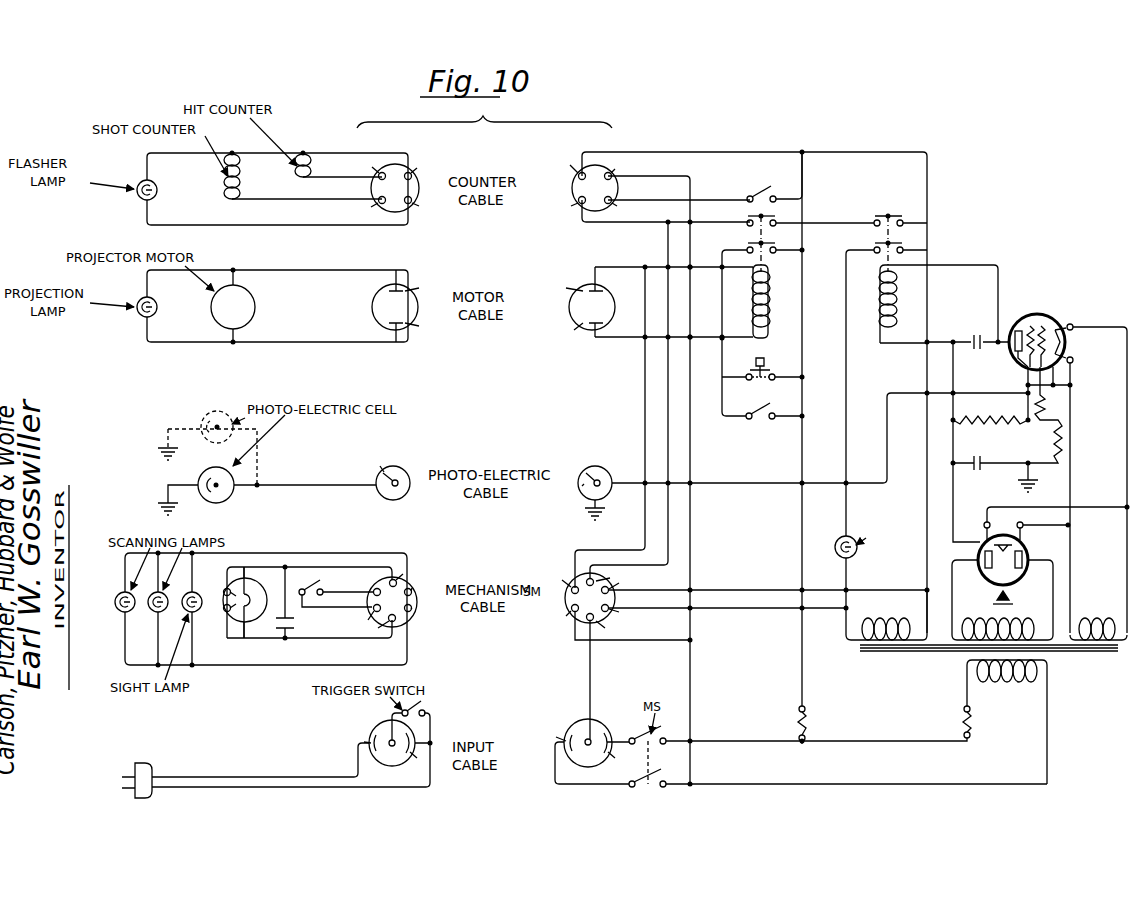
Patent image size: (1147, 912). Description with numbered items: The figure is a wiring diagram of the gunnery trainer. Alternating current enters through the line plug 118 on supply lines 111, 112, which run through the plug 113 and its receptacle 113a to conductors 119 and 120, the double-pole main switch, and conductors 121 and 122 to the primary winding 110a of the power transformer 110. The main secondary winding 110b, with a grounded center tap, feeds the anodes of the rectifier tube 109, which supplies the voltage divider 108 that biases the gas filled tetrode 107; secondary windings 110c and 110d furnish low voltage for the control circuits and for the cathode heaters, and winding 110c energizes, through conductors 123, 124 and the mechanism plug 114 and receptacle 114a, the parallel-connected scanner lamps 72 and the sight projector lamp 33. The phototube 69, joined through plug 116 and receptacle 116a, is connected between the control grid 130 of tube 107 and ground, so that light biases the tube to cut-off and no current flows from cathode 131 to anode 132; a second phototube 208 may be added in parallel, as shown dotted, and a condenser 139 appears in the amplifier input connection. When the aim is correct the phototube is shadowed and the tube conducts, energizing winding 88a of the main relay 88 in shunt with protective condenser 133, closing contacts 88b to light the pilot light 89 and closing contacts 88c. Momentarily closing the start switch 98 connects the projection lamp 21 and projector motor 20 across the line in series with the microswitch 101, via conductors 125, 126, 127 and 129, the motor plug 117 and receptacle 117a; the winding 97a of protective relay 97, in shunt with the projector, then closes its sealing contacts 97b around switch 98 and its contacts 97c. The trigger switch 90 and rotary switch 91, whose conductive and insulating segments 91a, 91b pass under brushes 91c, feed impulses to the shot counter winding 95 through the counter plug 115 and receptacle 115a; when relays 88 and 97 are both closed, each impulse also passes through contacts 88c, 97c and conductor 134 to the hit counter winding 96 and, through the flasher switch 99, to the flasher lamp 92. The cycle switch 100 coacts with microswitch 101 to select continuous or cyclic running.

The motion picture projector 20 is at (258, 305).
The projection lamp 21 is at (138, 316).
The sight projector lamp 33 is at (199, 594).
The phototube 69 is at (231, 489).
The scanner lamps 72 is at (151, 611).
The main relay 88 is at (878, 310).
The relay energizing winding 88a is at (896, 322).
The relay contacts 88b is at (899, 249).
The relay contacts 88c is at (875, 217).
The pilot light 89 is at (856, 556).
The trigger switch 90 is at (428, 713).
The rotary switch 91 is at (237, 622).
The conductive segment 91a is at (254, 630).
The insulating segment 91b is at (243, 568).
The stationary brushes 91c is at (223, 609).
The flasher lamp 92 is at (139, 196).
The shot counter actuating winding 95 is at (225, 192).
The hit counter actuating winding 96 is at (298, 177).
The protective relay 97 is at (776, 300).
The relay energizing winding 97a is at (770, 288).
The sealing contacts 97b is at (777, 250).
The relay contacts 97c is at (777, 224).
The start switch 98 is at (748, 372).
The flasher switch 99 is at (745, 196).
The cycle switch 100 is at (745, 421).
The microswitch 101 is at (311, 588).
The gas filled tetrode 107 is at (1040, 312).
The voltage divider 108 is at (1050, 414).
The rectifier tube 109 is at (986, 578).
The power transformer 110 is at (1063, 657).
The primary winding 110a is at (1008, 677).
The main secondary winding 110b is at (1033, 609).
The secondary winding 110c is at (892, 609).
The secondary winding 110d is at (1097, 618).
The supply line 111 is at (256, 778).
The supply line 112 is at (304, 789).
The plug 113 is at (371, 727).
The receptacle 113a is at (575, 722).
The plug 114 is at (412, 616).
The receptacle 114a is at (563, 597).
The plug 115 is at (412, 207).
The receptacle 115a is at (578, 210).
The plug 116 is at (396, 470).
The receptacle 116a is at (601, 470).
The plug 117 is at (402, 328).
The receptacle 117a is at (569, 312).
The line plug 118 is at (149, 770).
The conductor 119 is at (630, 737).
The conductor 120 is at (630, 787).
The conductor 121 is at (806, 687).
The conductor 122 is at (694, 697).
The conductor 123 is at (738, 612).
The conductor 124 is at (768, 590).
The conductor 125 is at (642, 538).
The conductor 126 is at (633, 266).
The conductor 127 is at (357, 268).
The conductor 129 is at (626, 339).
The control grid 130 is at (1036, 326).
The cathode 131 is at (1058, 328).
The anode 132 is at (1018, 331).
The protective condenser 133 is at (706, 150).
The conductor 134 is at (642, 226).
The capacitor 139 is at (972, 340).
The second phototube 208 is at (203, 422).